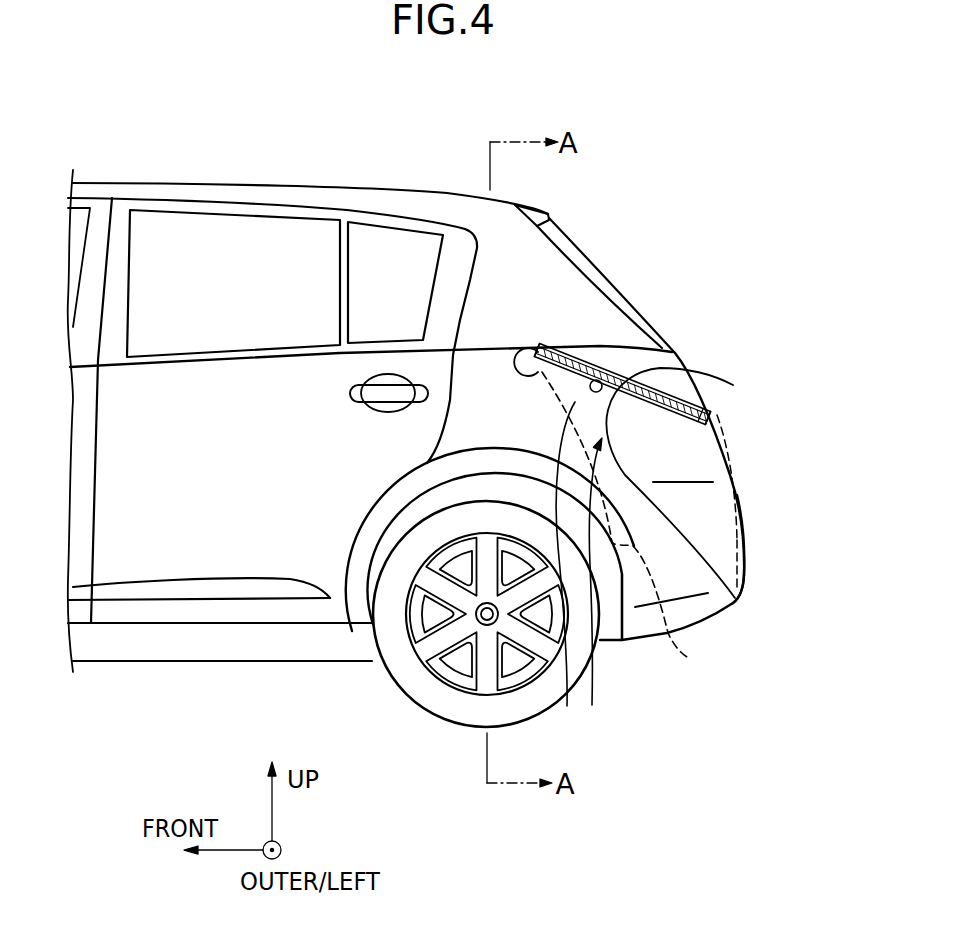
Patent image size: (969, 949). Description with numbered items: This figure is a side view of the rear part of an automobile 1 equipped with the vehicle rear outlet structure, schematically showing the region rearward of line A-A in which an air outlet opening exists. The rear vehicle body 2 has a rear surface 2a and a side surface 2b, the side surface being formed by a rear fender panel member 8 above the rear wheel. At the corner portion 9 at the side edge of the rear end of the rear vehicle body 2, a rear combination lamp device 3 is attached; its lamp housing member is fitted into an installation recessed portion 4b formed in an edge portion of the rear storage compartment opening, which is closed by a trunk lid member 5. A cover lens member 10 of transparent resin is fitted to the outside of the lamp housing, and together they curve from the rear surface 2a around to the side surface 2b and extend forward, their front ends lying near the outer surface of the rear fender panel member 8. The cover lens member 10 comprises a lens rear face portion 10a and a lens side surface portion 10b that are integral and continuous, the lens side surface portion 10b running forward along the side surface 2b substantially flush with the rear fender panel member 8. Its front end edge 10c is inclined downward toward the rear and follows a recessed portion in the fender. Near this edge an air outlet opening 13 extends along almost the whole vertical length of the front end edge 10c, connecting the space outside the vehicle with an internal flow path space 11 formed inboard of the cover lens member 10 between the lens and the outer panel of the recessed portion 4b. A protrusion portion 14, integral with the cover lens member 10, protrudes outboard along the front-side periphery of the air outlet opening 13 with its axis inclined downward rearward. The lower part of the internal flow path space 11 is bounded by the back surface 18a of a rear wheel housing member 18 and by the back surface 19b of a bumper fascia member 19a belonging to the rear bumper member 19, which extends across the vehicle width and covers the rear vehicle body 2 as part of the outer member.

The automobile 1 is at (96, 170).
The rear vehicle body 2 is at (564, 194).
The rear surface 2a is at (750, 440).
The side surface 2b is at (592, 705).
The rear combination lamp device 3 is at (712, 367).
The installation recessed portion 4b is at (686, 483).
The trunk lid member 5 is at (640, 370).
The rear fender panel member 8 is at (567, 706).
The corner portion 9 is at (700, 345).
The cover lens member 10 is at (694, 342).
The lens rear face portion 10a is at (714, 412).
The lens side surface portion 10b is at (607, 350).
The front end edge 10c is at (578, 347).
The internal flow path space 11 is at (705, 452).
The air outlet opening 13 is at (635, 343).
The protrusion portion 14 is at (740, 612).
The rear wheel housing member 18 is at (622, 610).
The back surface 18a is at (640, 527).
The rear bumper member 19 is at (760, 497).
The bumper fascia member 19a is at (747, 582).
The back surface 19b is at (726, 547).